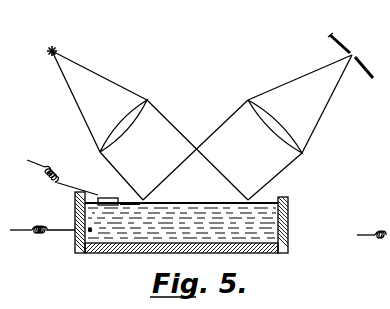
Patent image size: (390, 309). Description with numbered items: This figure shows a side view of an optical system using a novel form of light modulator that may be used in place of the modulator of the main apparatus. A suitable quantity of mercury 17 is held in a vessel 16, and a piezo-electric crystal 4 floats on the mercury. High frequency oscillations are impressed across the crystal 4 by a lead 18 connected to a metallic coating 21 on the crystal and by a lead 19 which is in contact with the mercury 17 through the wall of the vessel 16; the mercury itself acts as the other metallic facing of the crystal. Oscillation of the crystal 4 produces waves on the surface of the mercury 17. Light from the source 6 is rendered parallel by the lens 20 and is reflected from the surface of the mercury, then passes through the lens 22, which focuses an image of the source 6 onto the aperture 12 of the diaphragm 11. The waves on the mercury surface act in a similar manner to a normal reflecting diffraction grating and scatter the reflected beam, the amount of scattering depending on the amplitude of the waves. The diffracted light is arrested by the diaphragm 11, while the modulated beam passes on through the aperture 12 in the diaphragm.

The piezo-electric crystal 4 is at (110, 198).
The source 6 is at (55, 47).
The diaphragm 11 is at (331, 37).
The aperture 12 is at (357, 55).
The vessel 16 is at (288, 250).
The mercury 17 is at (288, 201).
The lead 18 is at (37, 162).
The lead 19 is at (22, 230).
The lens 20 is at (148, 98).
The metallic coating 21 is at (126, 200).
The lens 22 is at (250, 100).